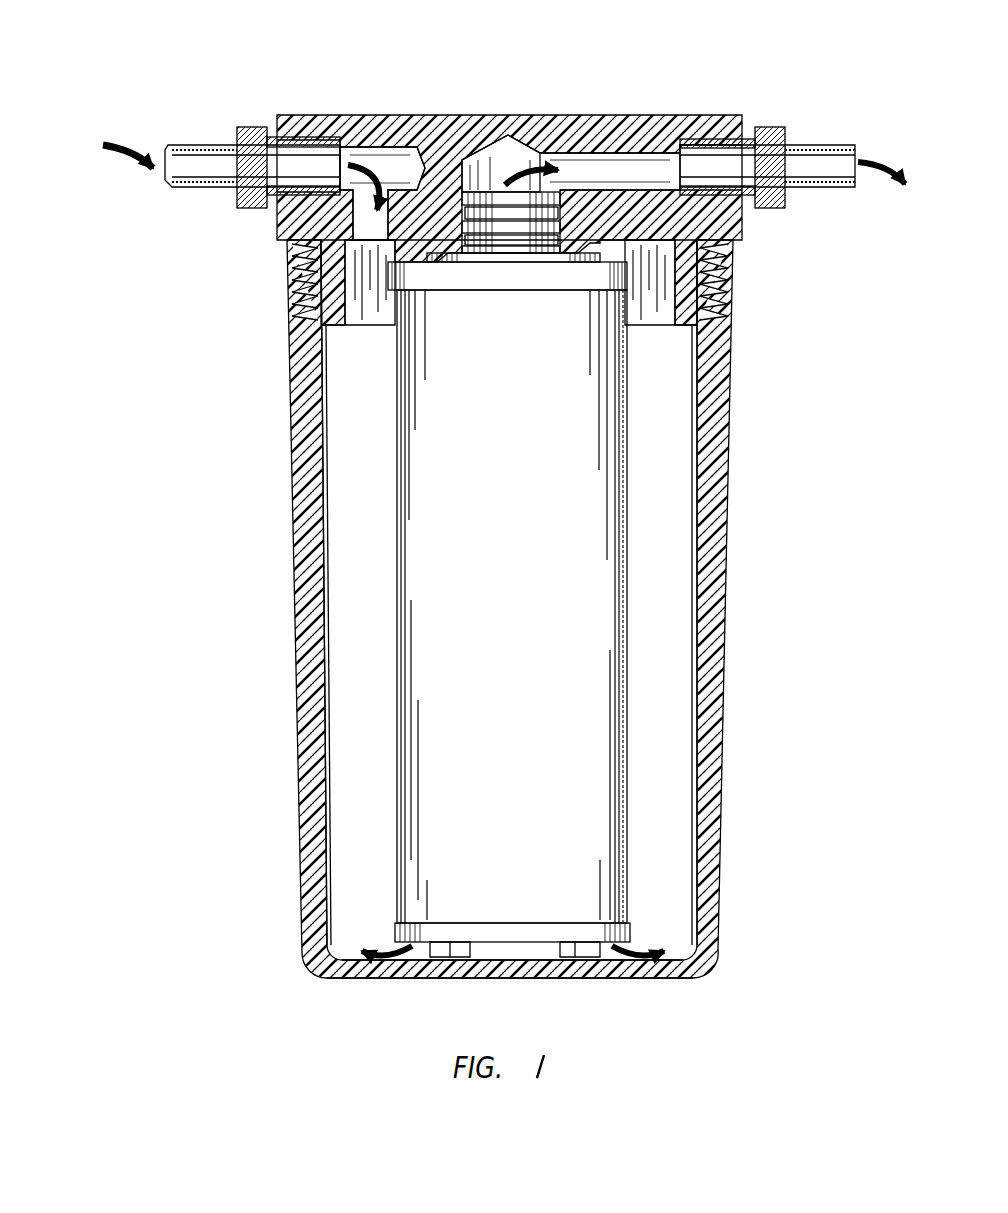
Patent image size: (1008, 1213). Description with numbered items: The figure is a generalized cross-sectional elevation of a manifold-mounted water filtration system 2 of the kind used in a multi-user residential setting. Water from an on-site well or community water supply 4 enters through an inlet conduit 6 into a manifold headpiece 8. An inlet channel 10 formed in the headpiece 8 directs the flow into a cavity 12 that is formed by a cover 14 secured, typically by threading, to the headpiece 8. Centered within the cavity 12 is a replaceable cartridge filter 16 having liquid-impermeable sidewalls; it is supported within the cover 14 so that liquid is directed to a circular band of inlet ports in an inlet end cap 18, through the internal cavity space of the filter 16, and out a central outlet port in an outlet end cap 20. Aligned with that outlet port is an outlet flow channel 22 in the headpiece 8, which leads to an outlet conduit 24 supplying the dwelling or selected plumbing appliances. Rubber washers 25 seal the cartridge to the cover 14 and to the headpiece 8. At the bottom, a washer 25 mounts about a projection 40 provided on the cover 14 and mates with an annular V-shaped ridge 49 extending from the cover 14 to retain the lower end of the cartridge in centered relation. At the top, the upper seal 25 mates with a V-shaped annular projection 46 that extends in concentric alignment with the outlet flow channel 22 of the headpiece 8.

The water filtration system 2 is at (256, 60).
The water supply 4 is at (93, 148).
The inlet conduit 6 is at (232, 150).
The manifold headpiece 8 is at (528, 112).
The inlet channel 10 is at (359, 158).
The cavity 12 is at (365, 595).
The cover 14 is at (288, 580).
The cartridge filter 16 is at (515, 498).
The inlet end cap 18 is at (537, 924).
The outlet end cap 20 is at (514, 265).
The outlet flow channel 22 is at (607, 152).
The outlet conduit 24 is at (822, 148).
The rubber washers 25 is at (470, 264).
The projection 40 is at (520, 956).
The V-shaped annular projection 46 is at (413, 272).
The annular V-shaped ridge 49 is at (445, 955).